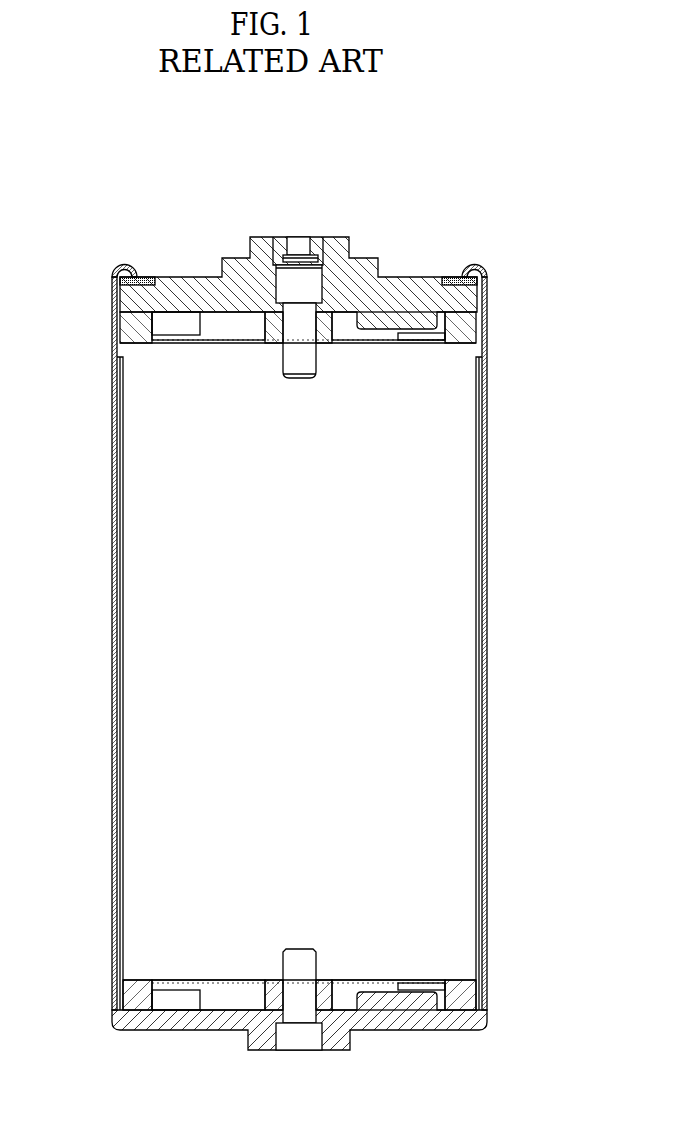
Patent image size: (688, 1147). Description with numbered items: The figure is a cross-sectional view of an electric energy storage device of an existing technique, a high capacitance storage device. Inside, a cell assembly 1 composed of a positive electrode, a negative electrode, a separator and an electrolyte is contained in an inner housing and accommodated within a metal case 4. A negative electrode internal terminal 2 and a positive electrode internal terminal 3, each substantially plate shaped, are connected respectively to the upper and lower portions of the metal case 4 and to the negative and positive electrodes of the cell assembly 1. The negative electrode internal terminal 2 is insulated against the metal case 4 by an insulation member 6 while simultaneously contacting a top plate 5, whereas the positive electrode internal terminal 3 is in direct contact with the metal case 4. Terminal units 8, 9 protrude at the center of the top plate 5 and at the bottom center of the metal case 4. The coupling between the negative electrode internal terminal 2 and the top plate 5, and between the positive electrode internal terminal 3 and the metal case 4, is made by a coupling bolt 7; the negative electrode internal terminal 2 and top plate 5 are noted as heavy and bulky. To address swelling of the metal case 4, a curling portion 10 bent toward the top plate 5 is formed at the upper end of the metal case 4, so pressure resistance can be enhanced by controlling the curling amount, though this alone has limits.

The cell assembly 1 is at (124, 505).
The negative electrode internal terminal 2 is at (139, 322).
The positive electrode internal terminal 3 is at (132, 993).
The metal case 4 is at (110, 557).
The top plate 5 is at (187, 276).
The insulation member 6 is at (117, 325).
The coupling bolt 7 is at (316, 963).
The terminal unit 8 is at (248, 237).
The terminal unit 9 is at (248, 1043).
The curling portion 10 is at (117, 250).